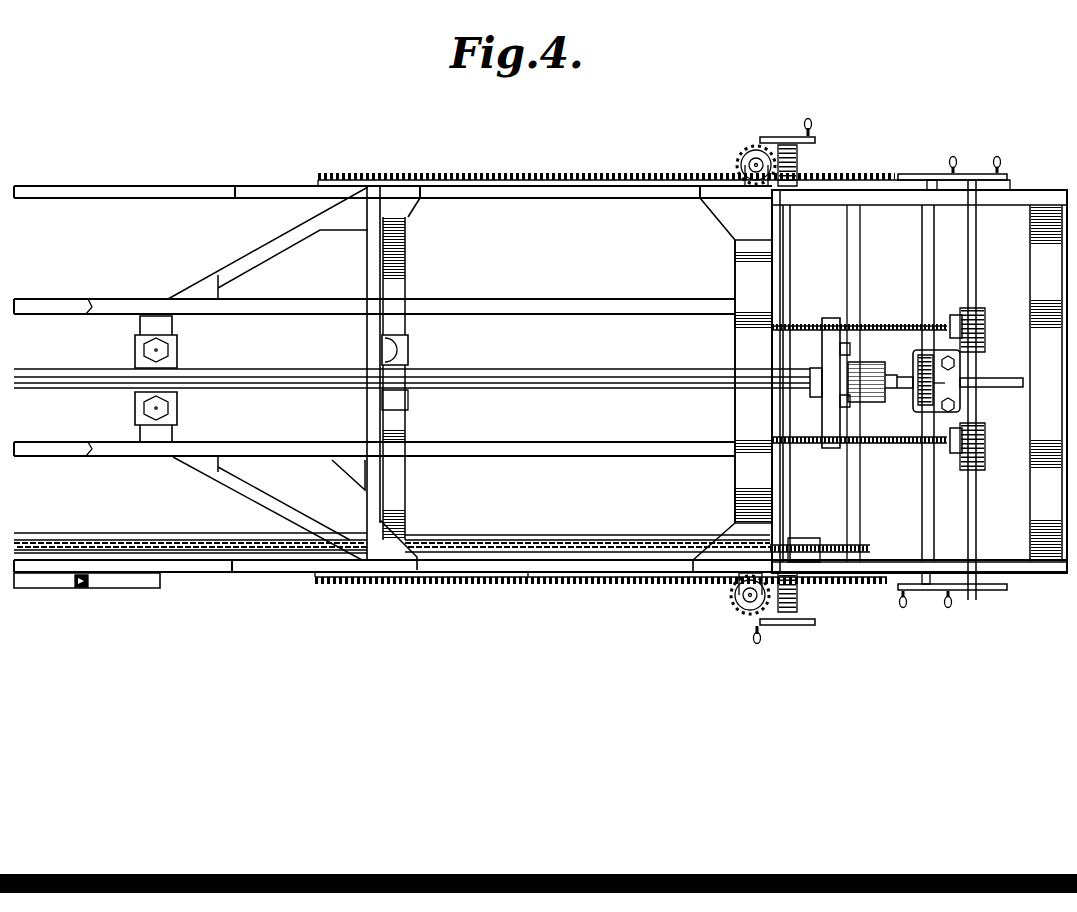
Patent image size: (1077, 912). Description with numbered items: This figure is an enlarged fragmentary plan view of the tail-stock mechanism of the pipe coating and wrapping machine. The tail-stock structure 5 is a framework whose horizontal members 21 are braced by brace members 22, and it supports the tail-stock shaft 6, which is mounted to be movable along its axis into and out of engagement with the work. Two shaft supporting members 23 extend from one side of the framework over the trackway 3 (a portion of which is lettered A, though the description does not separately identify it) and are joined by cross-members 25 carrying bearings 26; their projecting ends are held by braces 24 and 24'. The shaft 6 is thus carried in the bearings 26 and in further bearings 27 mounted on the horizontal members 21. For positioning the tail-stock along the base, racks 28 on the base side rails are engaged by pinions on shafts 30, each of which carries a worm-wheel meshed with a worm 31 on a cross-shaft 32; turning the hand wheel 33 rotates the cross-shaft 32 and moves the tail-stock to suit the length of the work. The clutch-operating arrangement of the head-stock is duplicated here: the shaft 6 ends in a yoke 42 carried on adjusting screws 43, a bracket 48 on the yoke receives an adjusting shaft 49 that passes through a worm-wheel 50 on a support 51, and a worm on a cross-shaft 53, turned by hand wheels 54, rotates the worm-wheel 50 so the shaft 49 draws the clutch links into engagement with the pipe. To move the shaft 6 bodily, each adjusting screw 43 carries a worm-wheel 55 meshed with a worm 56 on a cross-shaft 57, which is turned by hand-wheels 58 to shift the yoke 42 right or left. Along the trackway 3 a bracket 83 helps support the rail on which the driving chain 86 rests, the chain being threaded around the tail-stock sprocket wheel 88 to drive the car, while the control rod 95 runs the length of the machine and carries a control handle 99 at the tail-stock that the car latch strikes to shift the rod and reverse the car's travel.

The trackway 3 is at (53, 190).
The rail section A is at (248, 190).
The tail-stock structure 5 is at (528, 566).
The tail-stock shaft 6 is at (240, 372).
The horizontal members 21 is at (502, 190).
The brace members 22 is at (876, 195).
The shaft supporting members 23 is at (75, 312).
The brace 24 is at (374, 376).
The brace 24' is at (268, 373).
The cross-members 25 is at (152, 318).
The bearings 26 is at (175, 398).
The bearings 27 is at (410, 355).
The racks 28 is at (394, 175).
The shafts 30 is at (750, 162).
The worm 31 is at (800, 165).
The cross-shaft 32 is at (787, 500).
The hand wheel 33 is at (783, 137).
The yoke 42 is at (832, 320).
The adjusting screws 43 is at (880, 325).
The bracket 48 is at (868, 398).
The adjusting shaft 49 is at (1000, 374).
The worm-wheel 50 is at (915, 365).
The support 51 is at (962, 388).
The cross-shaft 53 is at (925, 250).
The hand wheels 54 is at (930, 175).
The worm-wheel 55 is at (965, 330).
The worm 56 is at (965, 322).
The cross-shaft 57 is at (975, 268).
The hand-wheels 58 is at (1002, 170).
The bracket 83 is at (52, 540).
The chain 86 is at (538, 540).
The sprocket wheel 88 is at (873, 540).
The control rod 95 is at (48, 580).
The control handle 99 is at (80, 584).